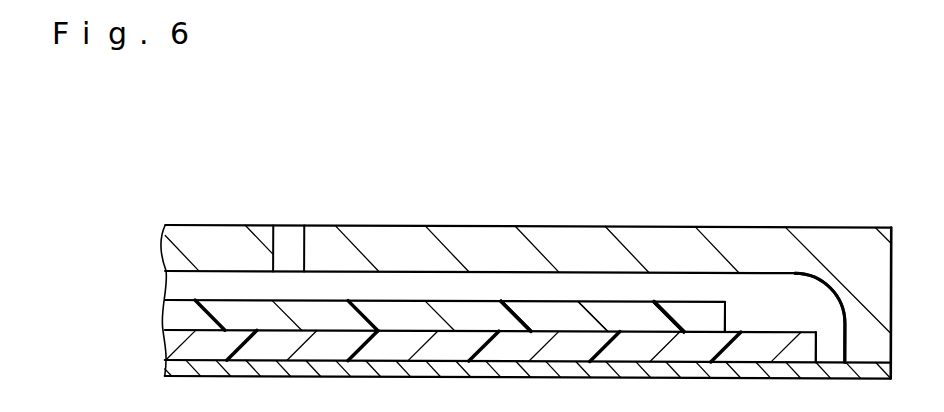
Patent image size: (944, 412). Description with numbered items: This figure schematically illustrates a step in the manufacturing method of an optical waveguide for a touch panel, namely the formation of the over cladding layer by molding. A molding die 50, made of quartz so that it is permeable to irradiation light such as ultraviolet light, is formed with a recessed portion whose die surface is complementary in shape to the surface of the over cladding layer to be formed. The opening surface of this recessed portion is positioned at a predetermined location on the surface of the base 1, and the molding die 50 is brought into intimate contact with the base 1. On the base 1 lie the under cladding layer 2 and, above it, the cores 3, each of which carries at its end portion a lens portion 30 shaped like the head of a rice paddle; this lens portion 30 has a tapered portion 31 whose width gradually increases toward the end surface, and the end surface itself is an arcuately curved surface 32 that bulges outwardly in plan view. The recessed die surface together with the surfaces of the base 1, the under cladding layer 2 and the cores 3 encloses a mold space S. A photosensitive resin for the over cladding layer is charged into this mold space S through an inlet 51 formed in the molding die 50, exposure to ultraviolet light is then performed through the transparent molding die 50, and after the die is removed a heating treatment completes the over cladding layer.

The base 1 is at (168, 369).
The under cladding layer 2 is at (168, 342).
The core 3 is at (177, 313).
The lens portion 30 is at (768, 158).
The tapered portion 31 is at (557, 310).
The arcuately curved surface 32 is at (725, 315).
The molding die 50 is at (212, 238).
The inlet 51 is at (294, 233).
The mold space S is at (402, 287).